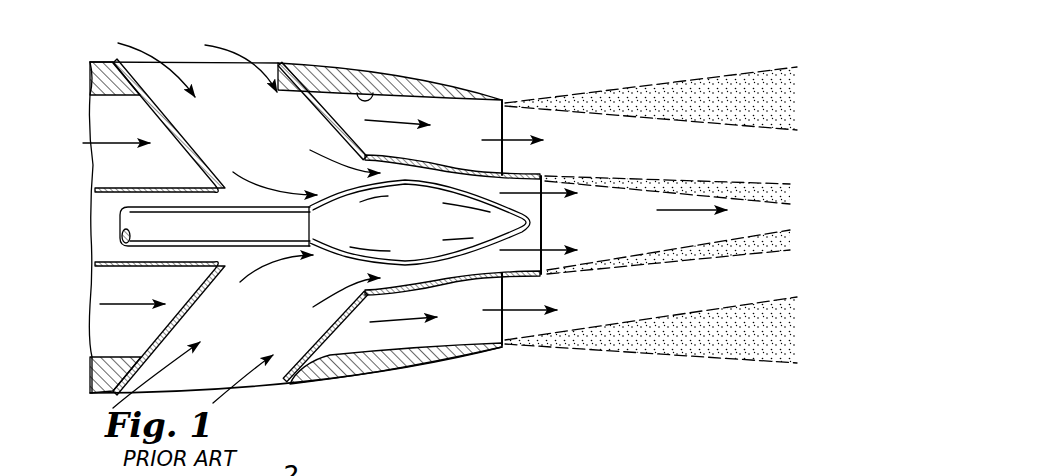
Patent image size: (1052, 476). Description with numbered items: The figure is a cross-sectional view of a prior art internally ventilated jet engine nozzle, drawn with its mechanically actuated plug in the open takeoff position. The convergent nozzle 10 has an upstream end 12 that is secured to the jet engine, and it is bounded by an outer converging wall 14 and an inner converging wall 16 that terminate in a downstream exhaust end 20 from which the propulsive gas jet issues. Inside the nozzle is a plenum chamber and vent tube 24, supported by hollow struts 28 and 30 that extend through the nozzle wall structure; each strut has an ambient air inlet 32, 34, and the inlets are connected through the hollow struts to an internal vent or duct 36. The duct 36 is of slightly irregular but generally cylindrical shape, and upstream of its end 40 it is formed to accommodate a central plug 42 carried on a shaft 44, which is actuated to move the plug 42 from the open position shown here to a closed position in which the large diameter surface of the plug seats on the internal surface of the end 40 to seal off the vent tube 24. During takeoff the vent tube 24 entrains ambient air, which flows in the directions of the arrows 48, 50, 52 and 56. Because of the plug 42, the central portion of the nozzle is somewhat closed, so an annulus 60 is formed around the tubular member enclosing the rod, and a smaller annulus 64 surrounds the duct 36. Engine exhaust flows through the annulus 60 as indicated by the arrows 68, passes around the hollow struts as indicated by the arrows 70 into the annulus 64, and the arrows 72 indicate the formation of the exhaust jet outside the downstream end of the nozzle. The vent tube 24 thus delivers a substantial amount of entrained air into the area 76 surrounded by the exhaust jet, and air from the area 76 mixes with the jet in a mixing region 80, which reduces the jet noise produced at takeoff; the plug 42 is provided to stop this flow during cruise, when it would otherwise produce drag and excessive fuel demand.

The convergent nozzle 10 is at (347, 58).
The upstream end 12 is at (90, 80).
The outer converging wall 14 is at (311, 63).
The inner converging wall 16 is at (377, 90).
The downstream exhaust end 20 is at (505, 100).
The plenum chamber and vent tube 24 is at (443, 295).
The hollow strut 28 is at (268, 67).
The hollow strut 30 is at (273, 385).
The ambient air inlet 32 is at (192, 67).
The ambient air inlet 34 is at (205, 393).
The internal vent or duct 36 is at (463, 280).
The duct end 40 is at (538, 273).
The central plug 42 is at (413, 232).
The shaft 44 is at (220, 234).
The arrows 48 is at (162, 63).
The arrows 50 is at (322, 168).
The arrows 52 is at (536, 196).
The arrows 56 is at (685, 210).
The annulus 60 is at (143, 174).
The annulus 64 is at (463, 152).
The arrows 68 is at (123, 305).
The arrows 70 is at (389, 328).
The arrows 72 is at (507, 143).
The area 76 is at (620, 232).
The mixing region 80 is at (747, 181).